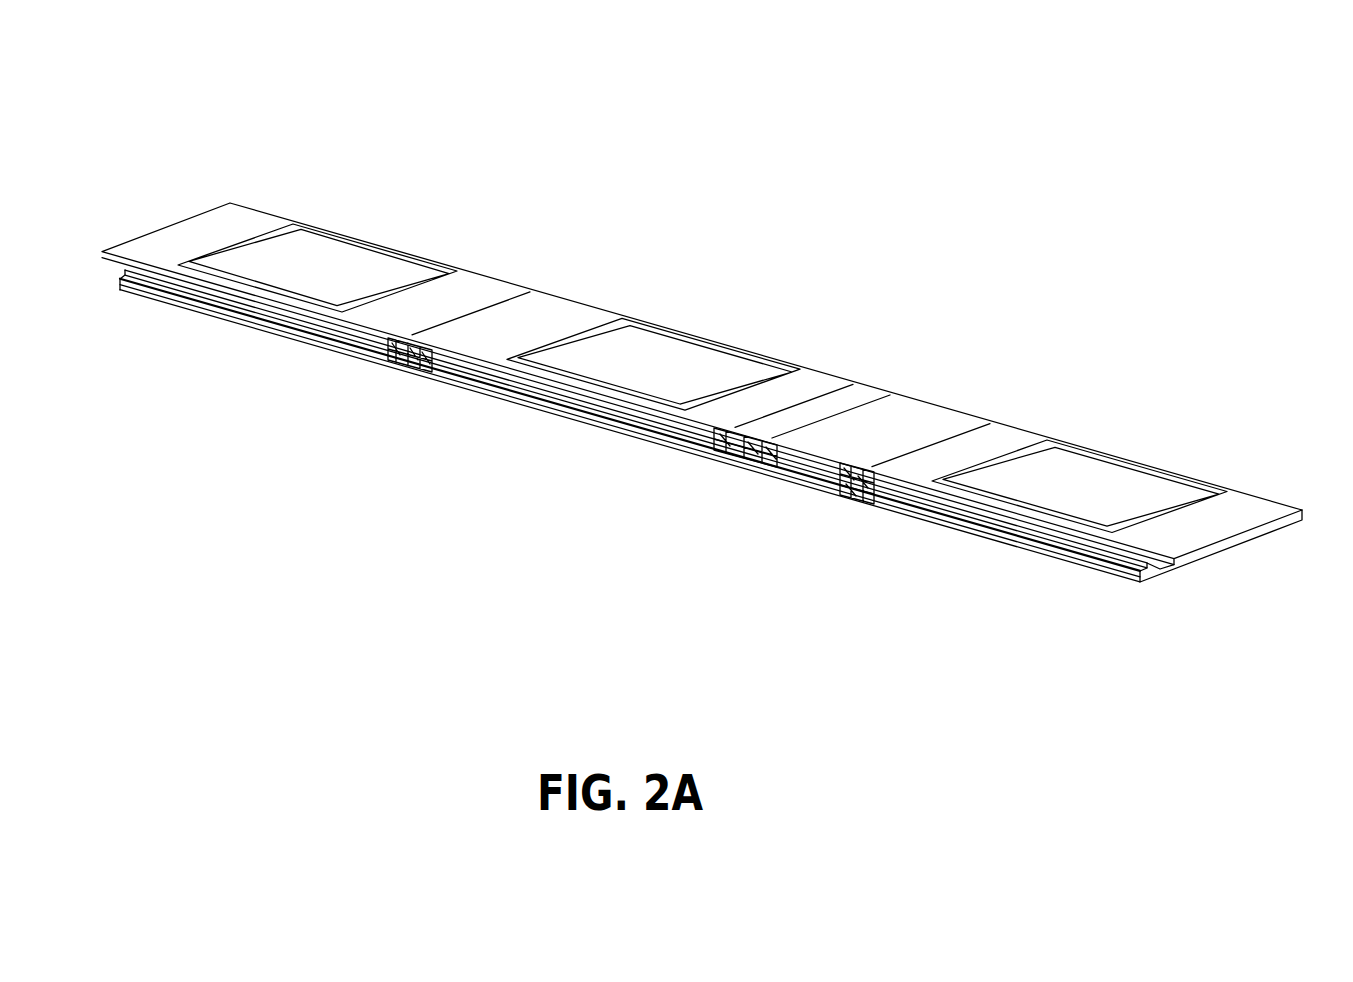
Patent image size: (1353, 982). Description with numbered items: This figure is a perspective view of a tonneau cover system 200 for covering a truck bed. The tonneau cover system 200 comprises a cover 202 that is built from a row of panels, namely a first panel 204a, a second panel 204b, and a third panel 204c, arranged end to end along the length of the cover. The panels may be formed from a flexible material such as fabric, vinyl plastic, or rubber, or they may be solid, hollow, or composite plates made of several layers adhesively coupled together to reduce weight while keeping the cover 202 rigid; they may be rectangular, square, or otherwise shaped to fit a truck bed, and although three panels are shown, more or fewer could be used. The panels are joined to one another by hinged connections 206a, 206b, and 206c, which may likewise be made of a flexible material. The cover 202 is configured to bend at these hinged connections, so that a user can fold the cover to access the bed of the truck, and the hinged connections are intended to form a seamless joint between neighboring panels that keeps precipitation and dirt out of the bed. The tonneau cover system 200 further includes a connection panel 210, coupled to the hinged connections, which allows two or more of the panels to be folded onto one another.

The tonneau cover system 200 is at (702, 351).
The cover 202 is at (335, 241).
The panel 204a is at (447, 267).
The panel 204b is at (681, 338).
The panel 204c is at (1047, 440).
The hinged connection 206a is at (423, 348).
The hinged connection 206b is at (760, 455).
The hinged connection 206c is at (880, 490).
The connection panel 210 is at (900, 413).